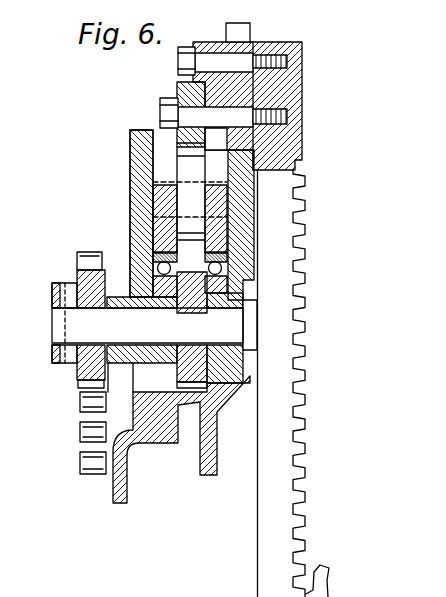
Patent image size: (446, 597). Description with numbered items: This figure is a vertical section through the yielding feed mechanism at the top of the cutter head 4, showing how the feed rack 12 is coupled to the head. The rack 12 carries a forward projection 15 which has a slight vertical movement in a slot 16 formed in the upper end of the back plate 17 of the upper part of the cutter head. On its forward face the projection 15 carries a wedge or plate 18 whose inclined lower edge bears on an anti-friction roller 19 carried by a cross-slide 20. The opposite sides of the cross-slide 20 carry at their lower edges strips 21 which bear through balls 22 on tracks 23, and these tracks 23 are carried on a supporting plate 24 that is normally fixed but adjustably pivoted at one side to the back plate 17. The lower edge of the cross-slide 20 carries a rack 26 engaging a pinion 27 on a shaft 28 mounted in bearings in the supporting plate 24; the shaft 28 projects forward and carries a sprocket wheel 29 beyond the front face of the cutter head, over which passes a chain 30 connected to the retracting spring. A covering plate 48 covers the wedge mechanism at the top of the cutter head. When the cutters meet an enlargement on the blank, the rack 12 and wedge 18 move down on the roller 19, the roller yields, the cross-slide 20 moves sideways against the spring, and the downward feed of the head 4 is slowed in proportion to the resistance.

The head 4 is at (120, 483).
The rack 12 is at (267, 513).
The forward projection 15 is at (224, 40).
The slot 16 is at (243, 140).
The back plate 17 is at (250, 195).
The wedge or plate 18 is at (177, 90).
The anti-friction roller 19 is at (180, 172).
The cross-slide 20 is at (158, 223).
The strips 21 is at (152, 262).
The balls 22 is at (157, 268).
The tracks 23 is at (155, 282).
The supporting plate 24 is at (232, 293).
The rack 26 is at (207, 248).
The pinion 27 is at (185, 293).
The shaft 28 is at (80, 328).
The sprocket wheel 29 is at (83, 368).
The chain 30 is at (82, 428).
The covering plate 48 is at (133, 192).